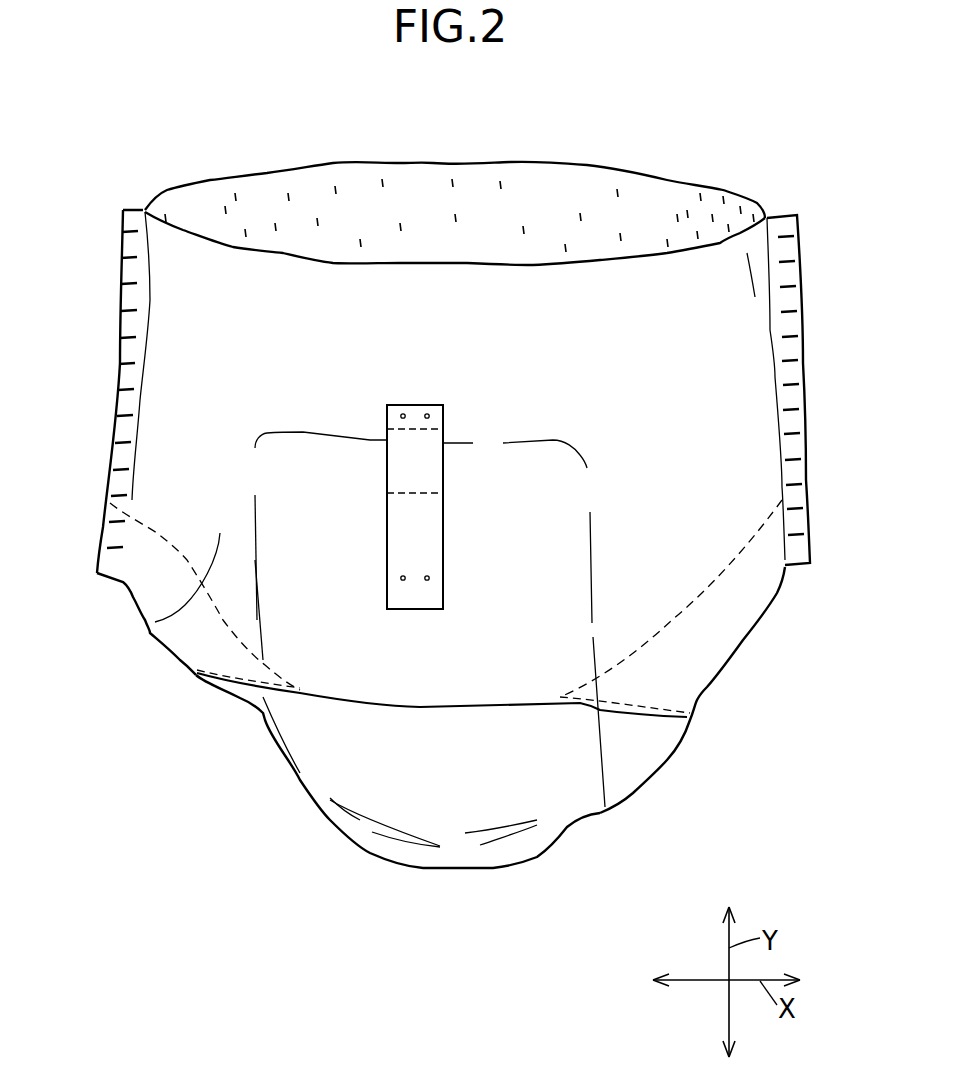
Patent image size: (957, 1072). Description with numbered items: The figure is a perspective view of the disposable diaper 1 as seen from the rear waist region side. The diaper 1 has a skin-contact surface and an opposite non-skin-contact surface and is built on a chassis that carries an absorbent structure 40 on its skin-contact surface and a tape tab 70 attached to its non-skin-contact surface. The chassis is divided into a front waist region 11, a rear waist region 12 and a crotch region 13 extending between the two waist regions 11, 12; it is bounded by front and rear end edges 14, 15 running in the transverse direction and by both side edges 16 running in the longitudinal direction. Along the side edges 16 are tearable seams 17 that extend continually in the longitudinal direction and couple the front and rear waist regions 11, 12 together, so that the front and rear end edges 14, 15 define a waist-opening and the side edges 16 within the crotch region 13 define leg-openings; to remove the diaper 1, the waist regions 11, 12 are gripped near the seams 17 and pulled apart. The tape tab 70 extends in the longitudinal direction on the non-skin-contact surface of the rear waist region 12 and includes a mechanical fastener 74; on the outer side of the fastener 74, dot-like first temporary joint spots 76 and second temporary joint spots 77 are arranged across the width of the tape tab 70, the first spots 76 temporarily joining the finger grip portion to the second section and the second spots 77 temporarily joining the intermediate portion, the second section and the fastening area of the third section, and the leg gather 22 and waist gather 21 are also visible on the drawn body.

The disposable diaper 1 is at (683, 137).
The front waist region 11 is at (570, 193).
The rear waist region 12 is at (727, 395).
The crotch region 13 is at (460, 847).
The front end edge 14 is at (517, 163).
The rear end edge 15 is at (472, 262).
The side edges 16 is at (123, 342).
The tearable seams 17 is at (787, 460).
The waist gathers 21 is at (415, 200).
The leg opening gather 22 is at (150, 618).
The absorbent structure 40 is at (357, 667).
The tape tab 70 is at (457, 533).
The mechanical fastener 74 is at (420, 465).
The first temporary joint spots 76 is at (427, 410).
The second temporary joint spots 77 is at (427, 582).